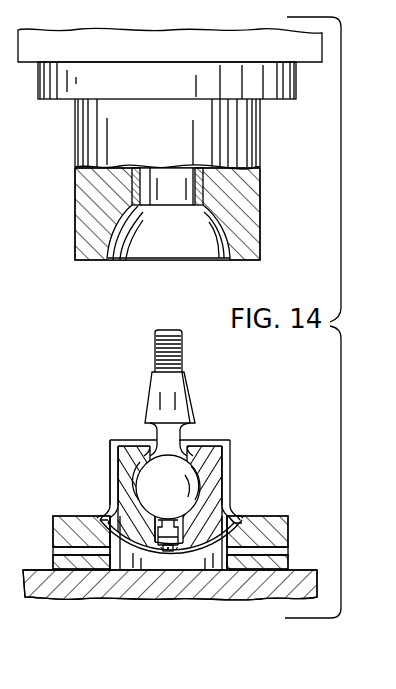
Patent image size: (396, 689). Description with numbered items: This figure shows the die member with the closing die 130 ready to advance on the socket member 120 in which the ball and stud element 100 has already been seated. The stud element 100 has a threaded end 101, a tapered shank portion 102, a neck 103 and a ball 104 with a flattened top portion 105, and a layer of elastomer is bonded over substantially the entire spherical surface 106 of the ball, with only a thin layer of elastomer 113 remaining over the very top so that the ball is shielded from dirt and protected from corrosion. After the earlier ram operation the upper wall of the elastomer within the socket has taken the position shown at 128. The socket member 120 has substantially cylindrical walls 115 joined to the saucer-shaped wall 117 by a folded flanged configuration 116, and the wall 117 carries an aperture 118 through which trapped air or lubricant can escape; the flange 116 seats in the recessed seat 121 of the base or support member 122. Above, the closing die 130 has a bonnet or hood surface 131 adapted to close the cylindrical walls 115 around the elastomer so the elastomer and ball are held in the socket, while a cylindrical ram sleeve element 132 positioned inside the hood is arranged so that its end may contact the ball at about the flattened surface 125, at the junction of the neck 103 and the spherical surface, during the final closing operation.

The ball and stud element 100 is at (190, 493).
The threaded end 101 is at (180, 363).
The tapered shank portion 102 is at (148, 400).
The neck 103 is at (155, 443).
The ball 104 is at (191, 488).
The flattened top portion 105 is at (196, 508).
The spherical surface 106 is at (201, 472).
The thin layer of elastomer 113 is at (160, 534).
The cylindrical walls 115 is at (112, 457).
The folded flanged configuration 116 is at (103, 520).
The saucer-shaped wall 117 is at (200, 551).
The aperture 118 is at (172, 551).
The socket member 120 is at (233, 441).
The recessed seat 121 is at (243, 522).
The base or support member 122 is at (289, 538).
The flattened surface 125 is at (190, 452).
The upper wall thickness 128 is at (183, 536).
The closing die 130 is at (265, 236).
The bonnet or hood surface 131 is at (226, 243).
The ram sleeve element 132 is at (139, 232).